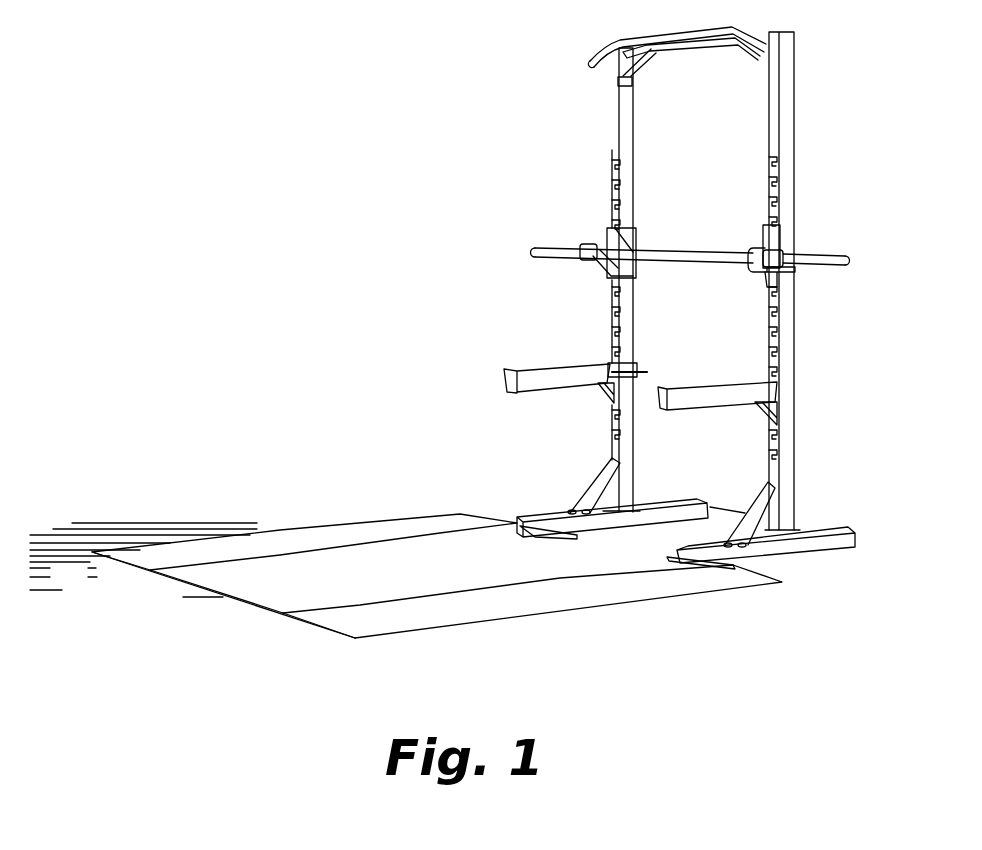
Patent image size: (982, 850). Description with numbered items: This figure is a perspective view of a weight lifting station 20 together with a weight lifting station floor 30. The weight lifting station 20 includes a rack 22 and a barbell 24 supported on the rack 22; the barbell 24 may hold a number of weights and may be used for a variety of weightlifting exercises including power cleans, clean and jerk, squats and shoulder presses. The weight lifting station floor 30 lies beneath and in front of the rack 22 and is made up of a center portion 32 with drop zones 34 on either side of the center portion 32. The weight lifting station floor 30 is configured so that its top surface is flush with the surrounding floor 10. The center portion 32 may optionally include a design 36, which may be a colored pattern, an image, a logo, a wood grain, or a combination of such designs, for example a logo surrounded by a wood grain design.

The surrounding floor 10 is at (86, 588).
The weight lifting station 20 is at (444, 245).
The rack 22 is at (788, 163).
The barbell 24 is at (838, 252).
The weight lifting station floor 30 is at (185, 470).
The center portion 32 is at (356, 573).
The drop zones 34 is at (386, 534).
The design 36 is at (345, 587).